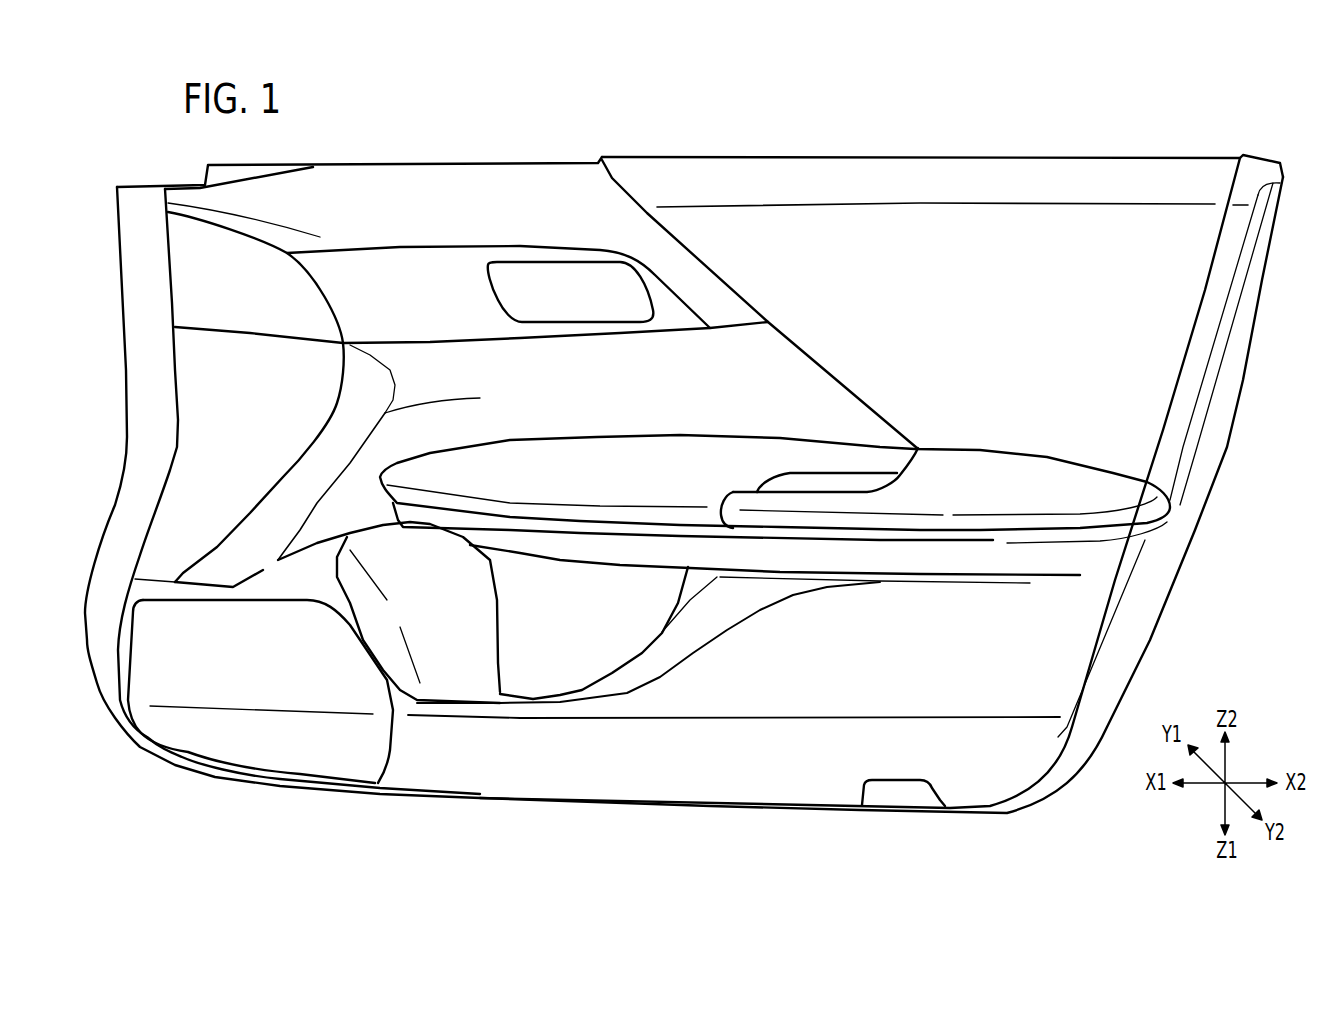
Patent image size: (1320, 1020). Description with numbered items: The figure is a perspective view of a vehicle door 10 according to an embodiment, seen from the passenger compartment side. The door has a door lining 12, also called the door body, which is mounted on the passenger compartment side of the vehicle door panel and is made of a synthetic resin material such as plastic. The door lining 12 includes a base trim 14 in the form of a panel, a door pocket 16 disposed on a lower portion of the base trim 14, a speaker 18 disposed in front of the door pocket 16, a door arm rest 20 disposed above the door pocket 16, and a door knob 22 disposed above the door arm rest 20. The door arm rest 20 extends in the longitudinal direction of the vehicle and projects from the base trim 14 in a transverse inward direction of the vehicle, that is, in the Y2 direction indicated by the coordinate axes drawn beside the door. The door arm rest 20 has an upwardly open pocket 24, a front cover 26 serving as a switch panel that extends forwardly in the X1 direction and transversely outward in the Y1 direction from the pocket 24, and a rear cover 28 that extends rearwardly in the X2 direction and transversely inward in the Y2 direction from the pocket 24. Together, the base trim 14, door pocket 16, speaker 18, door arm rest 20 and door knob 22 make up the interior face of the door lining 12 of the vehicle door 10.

The vehicle door 10 is at (424, 117).
The door lining 12 is at (1197, 152).
The base trim 14 is at (1157, 355).
The door pocket 16 is at (630, 633).
The speaker 18 is at (240, 753).
The door arm rest 20 is at (604, 437).
The door knob 22 is at (497, 291).
The pocket 24 is at (792, 479).
The front cover 26 is at (678, 447).
The rear cover 28 is at (1013, 470).